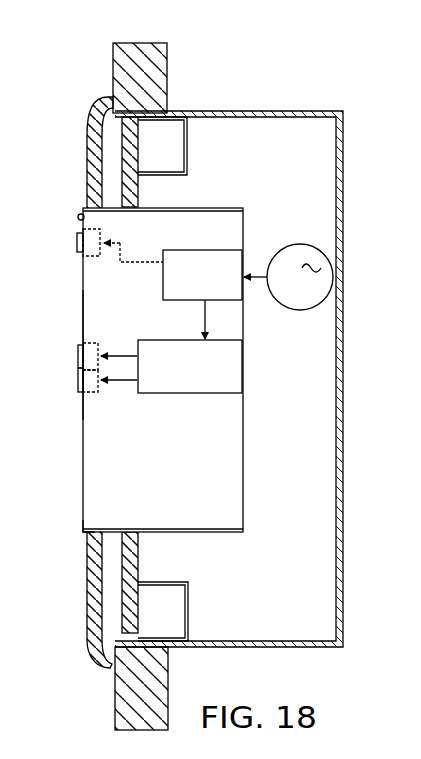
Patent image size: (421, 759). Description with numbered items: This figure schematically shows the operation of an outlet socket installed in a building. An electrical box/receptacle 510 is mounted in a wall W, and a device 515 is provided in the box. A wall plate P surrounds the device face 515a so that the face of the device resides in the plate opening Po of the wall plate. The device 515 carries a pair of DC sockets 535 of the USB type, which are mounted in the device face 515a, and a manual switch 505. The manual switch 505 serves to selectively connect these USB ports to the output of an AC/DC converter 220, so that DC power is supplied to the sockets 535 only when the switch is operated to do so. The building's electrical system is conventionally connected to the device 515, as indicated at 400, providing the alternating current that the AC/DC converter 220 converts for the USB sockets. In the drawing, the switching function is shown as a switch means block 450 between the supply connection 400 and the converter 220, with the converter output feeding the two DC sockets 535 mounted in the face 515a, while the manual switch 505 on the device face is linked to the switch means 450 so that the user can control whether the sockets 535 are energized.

The wall W is at (113, 70).
The electrical box/receptacle 510 is at (262, 110).
The device 515 is at (189, 207).
The device face 515a is at (83, 327).
The manual switch 505 is at (76, 245).
The switch means 450 is at (207, 250).
The building electrical system connection 400 is at (286, 244).
The AC/DC converter 220 is at (188, 395).
The DC sockets 535 is at (78, 378).
The plate opening Po is at (83, 530).
The wall plate P is at (87, 590).